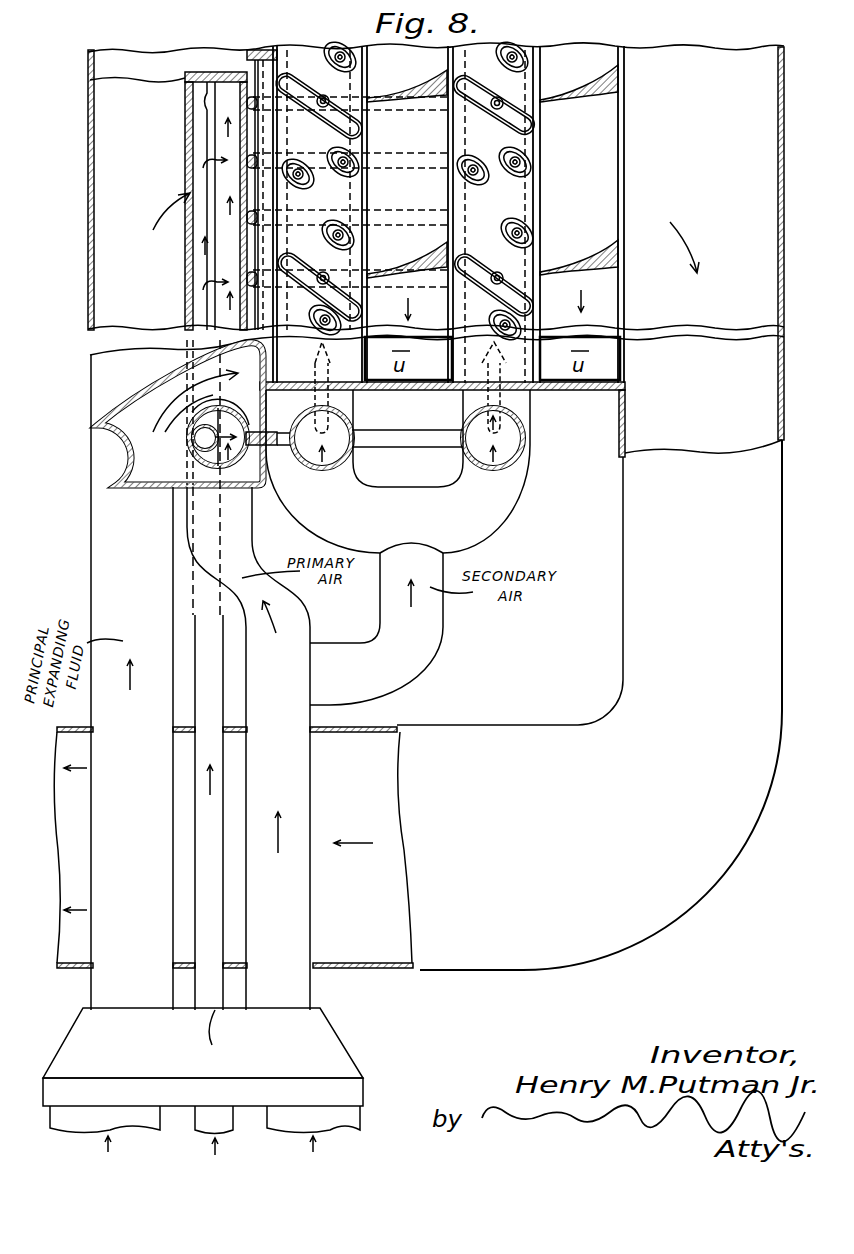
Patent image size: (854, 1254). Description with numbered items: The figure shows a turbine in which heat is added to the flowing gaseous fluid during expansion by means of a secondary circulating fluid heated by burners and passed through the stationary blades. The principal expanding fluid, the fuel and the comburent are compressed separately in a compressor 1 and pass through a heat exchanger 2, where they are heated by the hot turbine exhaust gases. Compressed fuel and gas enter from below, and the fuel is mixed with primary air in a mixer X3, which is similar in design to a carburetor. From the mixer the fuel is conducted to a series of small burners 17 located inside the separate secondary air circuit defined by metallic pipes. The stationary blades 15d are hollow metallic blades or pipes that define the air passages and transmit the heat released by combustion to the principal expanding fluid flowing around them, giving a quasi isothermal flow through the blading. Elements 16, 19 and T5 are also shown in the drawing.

The compressor 1 is at (325, 1063).
The heat exchanger 2 is at (85, 983).
The stationary blades 15d is at (297, 76).
The turbine blades 16 is at (421, 85).
The burners 17 is at (338, 113).
The oval blade sections 19 is at (533, 67).
The mixers X3 is at (195, 412).
The fluid passage T5 is at (73, 847).